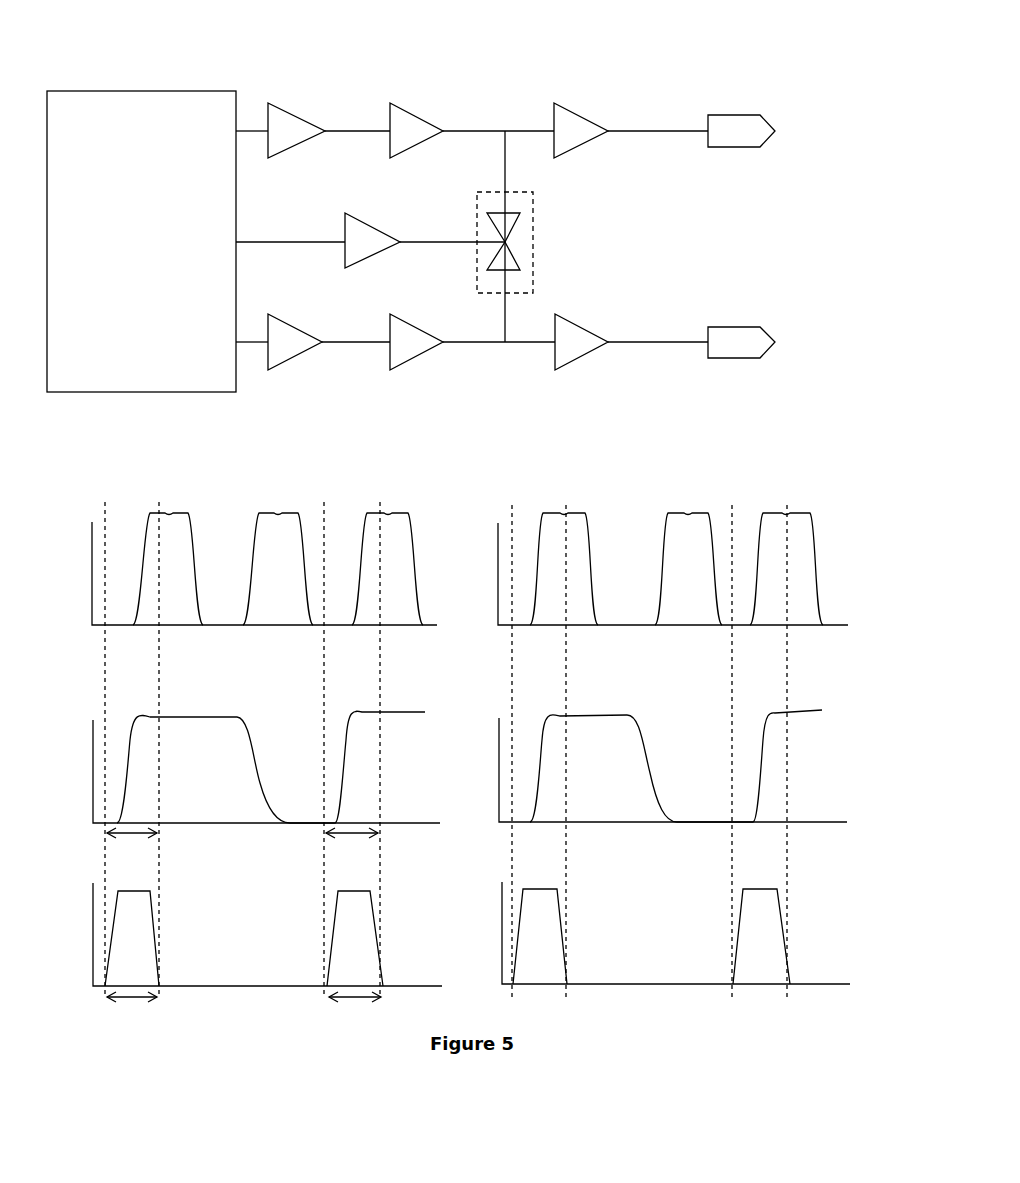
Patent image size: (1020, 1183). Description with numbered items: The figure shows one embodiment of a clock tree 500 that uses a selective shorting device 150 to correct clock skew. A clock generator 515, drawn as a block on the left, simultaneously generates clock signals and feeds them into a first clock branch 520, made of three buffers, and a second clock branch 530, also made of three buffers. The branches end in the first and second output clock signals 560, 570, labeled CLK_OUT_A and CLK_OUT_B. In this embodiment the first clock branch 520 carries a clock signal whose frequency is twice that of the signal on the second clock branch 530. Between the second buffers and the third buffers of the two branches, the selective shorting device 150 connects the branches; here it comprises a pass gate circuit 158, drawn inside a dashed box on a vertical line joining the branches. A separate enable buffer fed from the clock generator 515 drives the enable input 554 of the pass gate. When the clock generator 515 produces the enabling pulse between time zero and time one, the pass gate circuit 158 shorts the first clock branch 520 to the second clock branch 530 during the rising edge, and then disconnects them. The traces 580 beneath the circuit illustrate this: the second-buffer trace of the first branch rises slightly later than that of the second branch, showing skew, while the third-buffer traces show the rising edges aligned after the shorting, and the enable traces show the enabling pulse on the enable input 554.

The clock tree 500 is at (514, 44).
The clock generator 515 is at (212, 378).
The first clock branch 520 is at (357, 100).
The second clock branch 530 is at (368, 364).
The selective shorting device 150 is at (505, 220).
The pass gate circuit 158 is at (508, 232).
The enable input 554 is at (433, 250).
The first output clock signal 560 is at (733, 148).
The second output clock signal 570 is at (733, 359).
The traces 580 is at (281, 498).